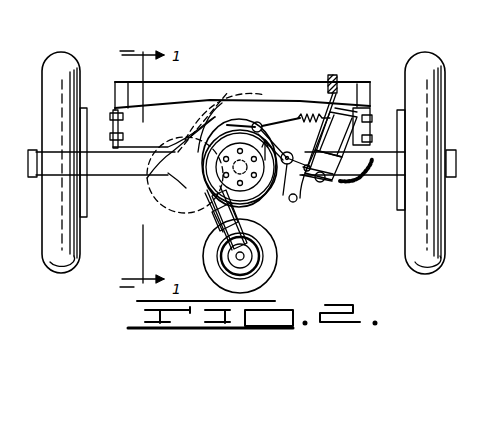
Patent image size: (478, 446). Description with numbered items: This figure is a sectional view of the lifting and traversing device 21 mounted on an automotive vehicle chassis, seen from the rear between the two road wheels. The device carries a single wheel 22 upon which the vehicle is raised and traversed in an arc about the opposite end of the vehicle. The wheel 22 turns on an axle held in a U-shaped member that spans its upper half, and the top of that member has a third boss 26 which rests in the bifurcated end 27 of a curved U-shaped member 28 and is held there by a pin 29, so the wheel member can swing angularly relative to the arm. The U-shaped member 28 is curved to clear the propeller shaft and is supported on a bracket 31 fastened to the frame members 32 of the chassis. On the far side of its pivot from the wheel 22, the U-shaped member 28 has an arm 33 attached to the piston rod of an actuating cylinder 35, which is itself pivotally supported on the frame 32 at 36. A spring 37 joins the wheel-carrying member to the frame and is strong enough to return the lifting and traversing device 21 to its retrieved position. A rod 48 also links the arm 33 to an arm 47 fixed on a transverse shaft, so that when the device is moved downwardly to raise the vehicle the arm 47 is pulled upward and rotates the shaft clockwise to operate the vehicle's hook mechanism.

The lifting and traversing device 21 is at (246, 239).
The wheel 22 is at (277, 265).
The third boss 26 is at (232, 213).
The bifurcated end 27 is at (210, 214).
The U-shaped member 28 is at (305, 182).
The pin 29 is at (214, 228).
The bracket 31 is at (275, 110).
The frame members 32 is at (324, 189).
The arm 33 is at (356, 196).
The actuating cylinder 35 is at (372, 126).
The pivotal support 36 is at (347, 107).
The spring 37 is at (295, 110).
The arm 47 is at (333, 75).
The rod 48 is at (323, 110).